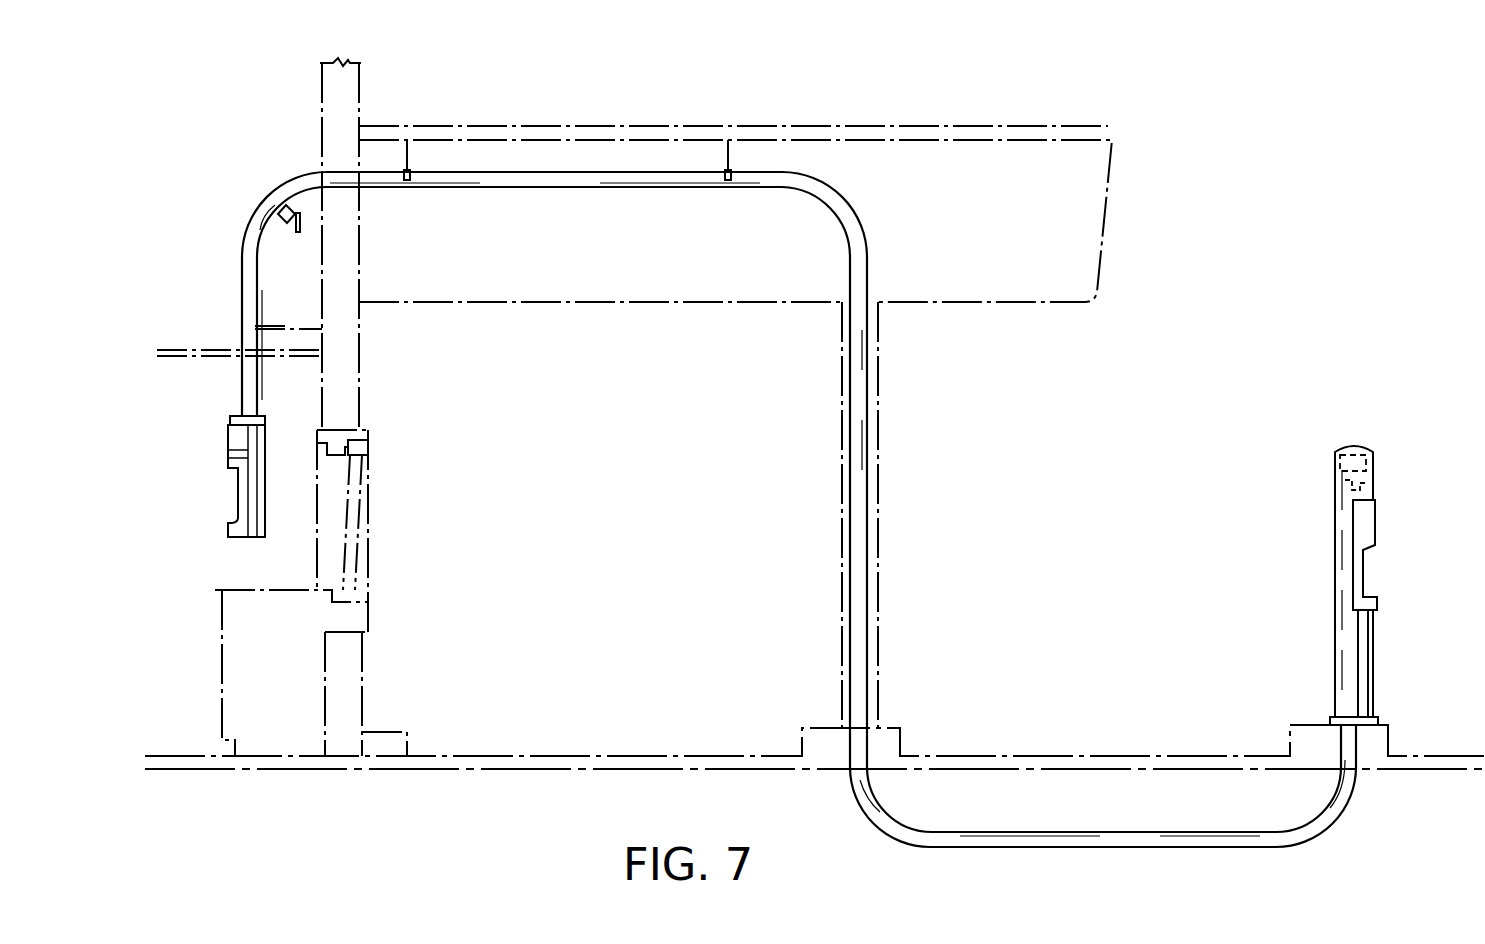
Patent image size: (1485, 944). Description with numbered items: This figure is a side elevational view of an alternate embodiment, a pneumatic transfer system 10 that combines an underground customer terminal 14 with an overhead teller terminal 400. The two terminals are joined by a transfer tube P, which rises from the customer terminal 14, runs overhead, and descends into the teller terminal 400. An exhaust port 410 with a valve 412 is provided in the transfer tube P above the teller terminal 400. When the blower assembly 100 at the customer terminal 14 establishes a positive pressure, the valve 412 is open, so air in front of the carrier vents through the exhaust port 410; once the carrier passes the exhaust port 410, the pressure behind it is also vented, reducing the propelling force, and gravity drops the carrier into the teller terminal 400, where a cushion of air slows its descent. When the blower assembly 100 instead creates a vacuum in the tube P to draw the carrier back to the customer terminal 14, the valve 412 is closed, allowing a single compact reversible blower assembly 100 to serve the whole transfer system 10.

The pneumatic transfer system 10 is at (1240, 228).
The transfer tube P is at (653, 190).
The exhaust port 410 is at (281, 213).
The valve 412 is at (302, 223).
The teller terminal 400 is at (272, 430).
The blower assembly 100 is at (1372, 452).
The customer terminal 14 is at (1400, 528).